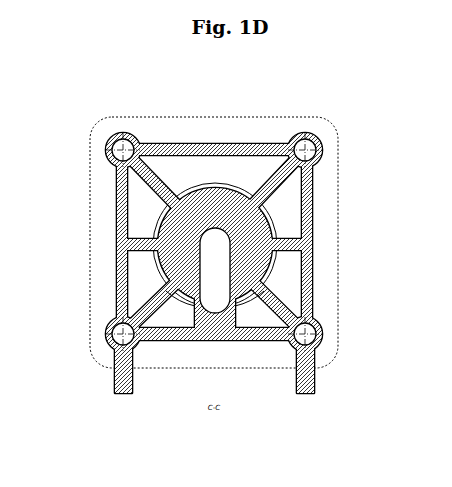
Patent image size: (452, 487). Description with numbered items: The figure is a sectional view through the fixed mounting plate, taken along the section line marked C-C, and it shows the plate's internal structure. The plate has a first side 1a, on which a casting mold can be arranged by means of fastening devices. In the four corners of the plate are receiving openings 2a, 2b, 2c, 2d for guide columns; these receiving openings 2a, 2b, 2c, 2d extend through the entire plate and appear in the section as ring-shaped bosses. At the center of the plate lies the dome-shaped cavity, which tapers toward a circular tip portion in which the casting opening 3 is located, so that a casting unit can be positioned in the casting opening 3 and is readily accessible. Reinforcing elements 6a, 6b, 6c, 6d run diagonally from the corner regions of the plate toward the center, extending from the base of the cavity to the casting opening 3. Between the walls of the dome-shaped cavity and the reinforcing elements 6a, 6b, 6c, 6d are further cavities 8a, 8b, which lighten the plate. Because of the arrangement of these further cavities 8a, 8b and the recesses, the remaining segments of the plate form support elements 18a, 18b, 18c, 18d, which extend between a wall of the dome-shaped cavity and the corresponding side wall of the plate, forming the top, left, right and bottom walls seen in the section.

The first side 1a is at (248, 132).
The receiving opening 2a is at (318, 146).
The receiving opening 2b is at (123, 140).
The receiving opening 2c is at (313, 338).
The receiving opening 2d is at (128, 342).
The casting opening 3 is at (219, 305).
The reinforcing element 6a is at (148, 177).
The reinforcing element 6b is at (287, 177).
The reinforcing element 6c is at (275, 302).
The reinforcing element 6d is at (148, 310).
The further cavity 8a is at (292, 273).
The further cavity 8b is at (148, 280).
The support element 18a is at (201, 146).
The support element 18b is at (120, 212).
The support element 18c is at (308, 220).
The support element 18d is at (242, 342).